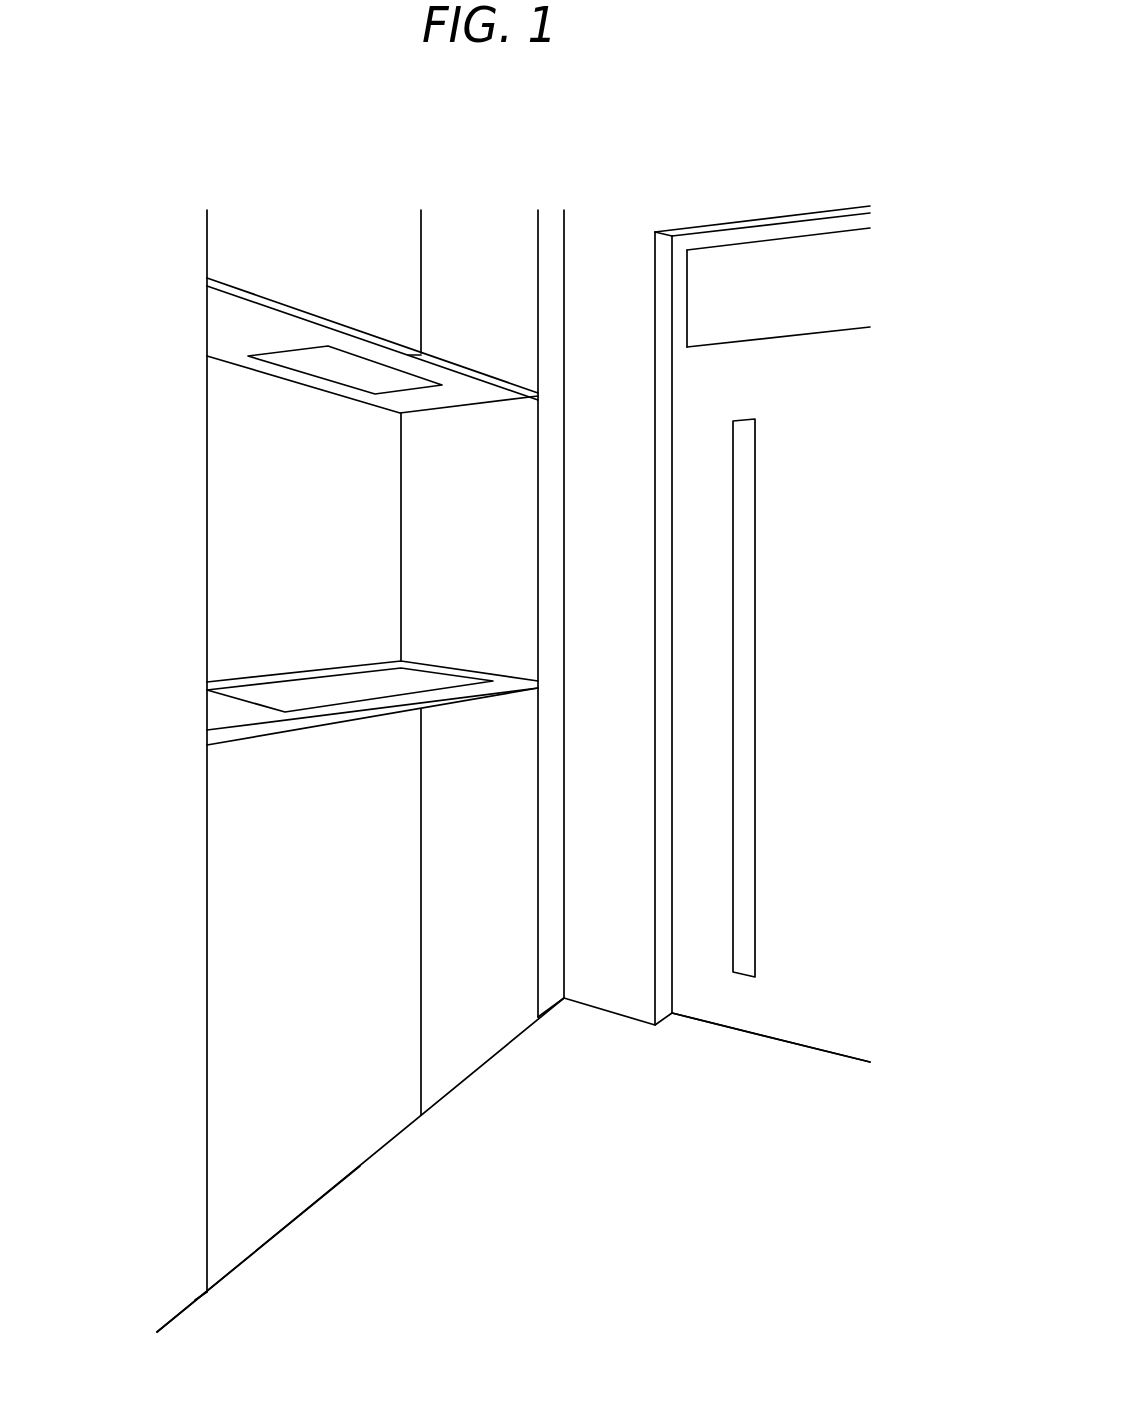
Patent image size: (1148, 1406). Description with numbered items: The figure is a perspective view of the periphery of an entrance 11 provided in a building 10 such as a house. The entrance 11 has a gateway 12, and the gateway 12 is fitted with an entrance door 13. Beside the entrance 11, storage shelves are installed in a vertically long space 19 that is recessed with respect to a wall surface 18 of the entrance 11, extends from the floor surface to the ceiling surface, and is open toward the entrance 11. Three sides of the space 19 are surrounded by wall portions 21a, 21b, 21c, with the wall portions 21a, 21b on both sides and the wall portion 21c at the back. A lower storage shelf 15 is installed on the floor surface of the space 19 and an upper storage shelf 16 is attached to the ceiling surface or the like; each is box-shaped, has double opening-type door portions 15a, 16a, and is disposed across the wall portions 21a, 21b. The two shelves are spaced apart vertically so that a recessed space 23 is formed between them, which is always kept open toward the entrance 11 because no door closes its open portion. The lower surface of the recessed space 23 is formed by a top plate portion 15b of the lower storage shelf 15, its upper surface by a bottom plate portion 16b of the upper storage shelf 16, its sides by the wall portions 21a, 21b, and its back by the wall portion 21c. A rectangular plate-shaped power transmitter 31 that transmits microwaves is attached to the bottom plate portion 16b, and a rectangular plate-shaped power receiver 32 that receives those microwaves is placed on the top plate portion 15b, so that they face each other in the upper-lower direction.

The building 10 is at (806, 172).
The entrance 11 is at (674, 1086).
The gateway 12 is at (672, 670).
The entrance door 13 is at (810, 1018).
The lower storage shelf 15 is at (360, 973).
The door portion 15a is at (490, 1033).
The top plate portion 15b is at (310, 722).
The upper storage shelf 16 is at (332, 352).
The door portion 16a is at (496, 357).
The bottom plate portion 16b is at (227, 322).
The wall surface 18 is at (552, 997).
The space 19 is at (292, 593).
The wall portion 21a is at (510, 497).
The wall portion 21b is at (207, 498).
The wall portion 21c is at (387, 545).
The recessed space 23 is at (347, 515).
The power transmitter 31 is at (343, 370).
The power receiver 32 is at (376, 688).